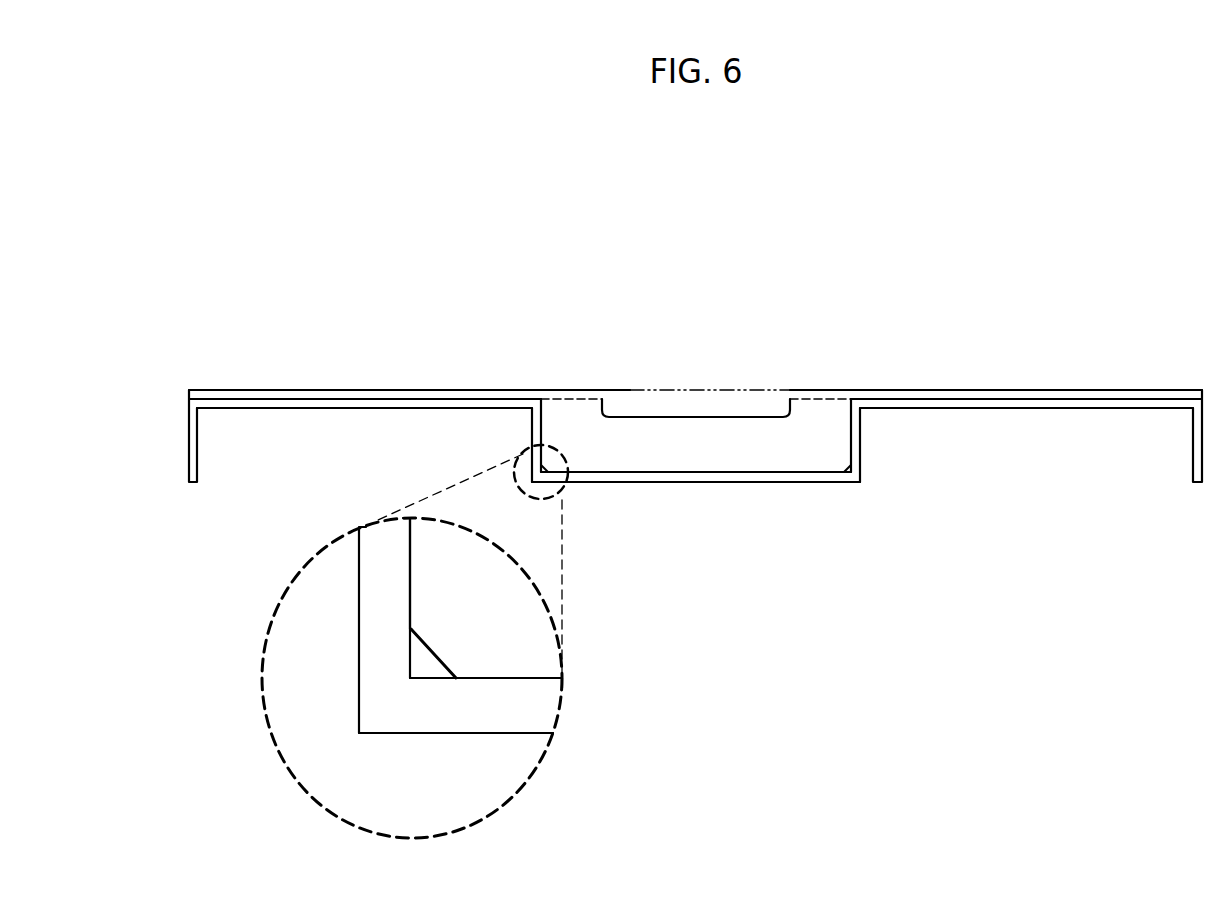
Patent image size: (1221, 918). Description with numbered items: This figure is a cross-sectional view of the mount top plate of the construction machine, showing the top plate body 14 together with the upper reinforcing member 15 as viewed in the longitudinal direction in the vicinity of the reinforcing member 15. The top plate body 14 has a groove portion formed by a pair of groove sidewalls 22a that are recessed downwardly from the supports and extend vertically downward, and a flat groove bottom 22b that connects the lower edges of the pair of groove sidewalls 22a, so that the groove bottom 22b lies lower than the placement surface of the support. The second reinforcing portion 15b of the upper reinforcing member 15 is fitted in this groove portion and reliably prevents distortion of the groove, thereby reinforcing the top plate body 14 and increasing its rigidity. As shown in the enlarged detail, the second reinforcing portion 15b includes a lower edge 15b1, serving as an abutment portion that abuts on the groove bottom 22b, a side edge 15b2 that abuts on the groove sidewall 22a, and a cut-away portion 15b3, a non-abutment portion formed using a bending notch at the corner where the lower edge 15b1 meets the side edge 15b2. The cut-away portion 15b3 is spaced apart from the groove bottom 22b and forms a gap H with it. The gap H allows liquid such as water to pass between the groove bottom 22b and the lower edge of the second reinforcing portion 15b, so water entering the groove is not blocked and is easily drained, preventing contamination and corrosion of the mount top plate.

The upper reinforcing member 15 is at (247, 363).
The top plate body 14 is at (375, 598).
The groove sidewall 22a is at (537, 426).
The groove bottom 22b is at (757, 478).
The second reinforcing portion 15b is at (738, 427).
The lower edge 15b1 is at (527, 677).
The side edge 15b2 is at (410, 595).
The cut-away portion 15b3 is at (440, 655).
The gap H is at (427, 663).